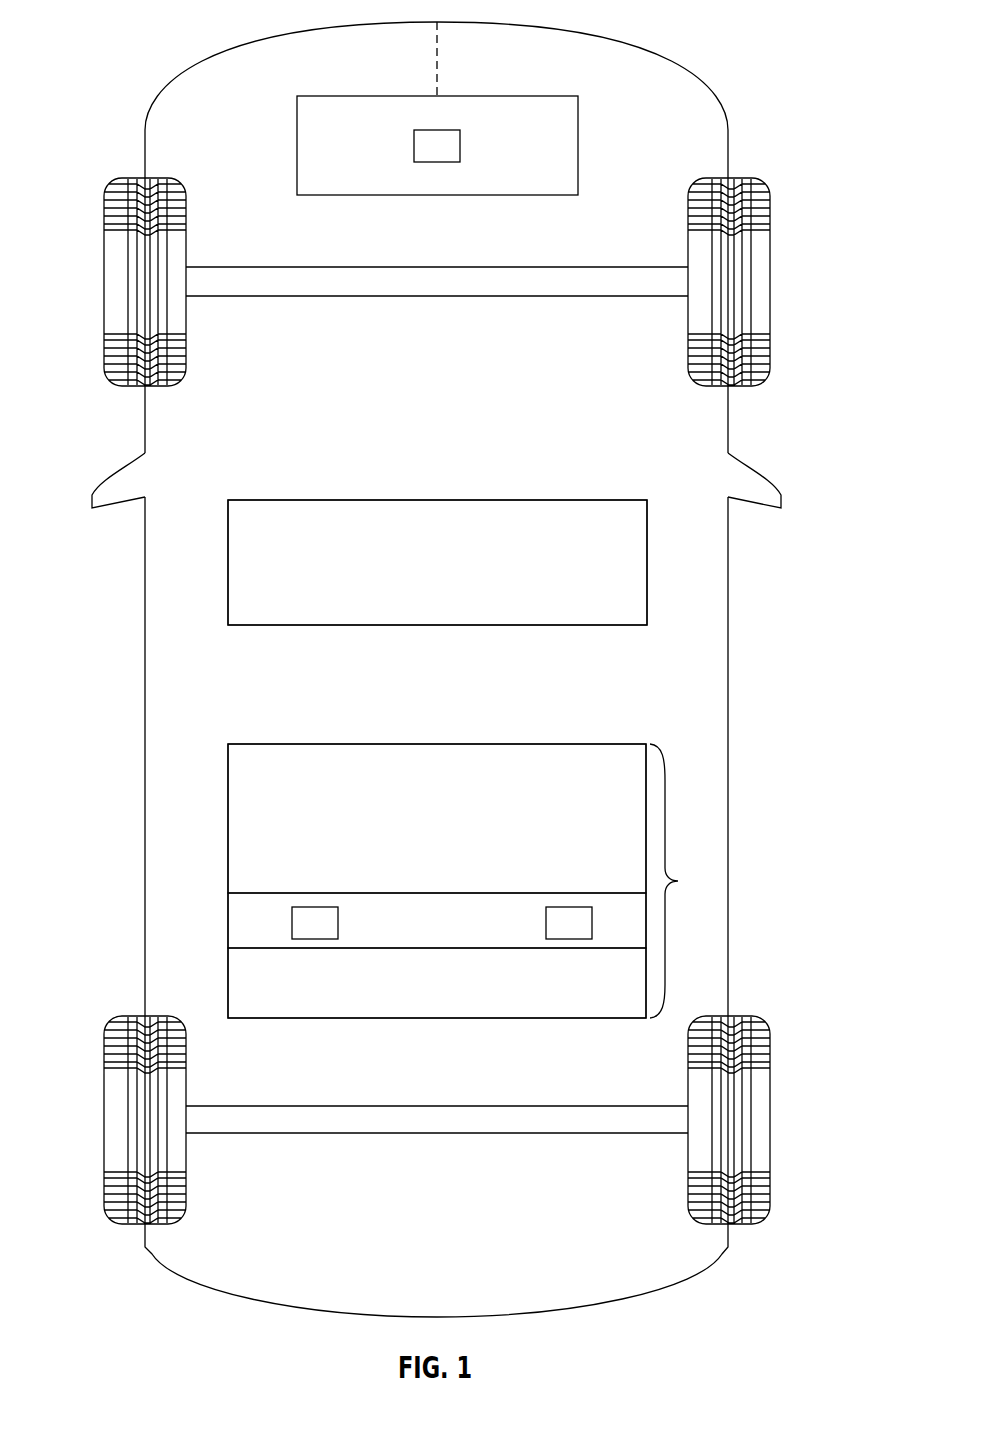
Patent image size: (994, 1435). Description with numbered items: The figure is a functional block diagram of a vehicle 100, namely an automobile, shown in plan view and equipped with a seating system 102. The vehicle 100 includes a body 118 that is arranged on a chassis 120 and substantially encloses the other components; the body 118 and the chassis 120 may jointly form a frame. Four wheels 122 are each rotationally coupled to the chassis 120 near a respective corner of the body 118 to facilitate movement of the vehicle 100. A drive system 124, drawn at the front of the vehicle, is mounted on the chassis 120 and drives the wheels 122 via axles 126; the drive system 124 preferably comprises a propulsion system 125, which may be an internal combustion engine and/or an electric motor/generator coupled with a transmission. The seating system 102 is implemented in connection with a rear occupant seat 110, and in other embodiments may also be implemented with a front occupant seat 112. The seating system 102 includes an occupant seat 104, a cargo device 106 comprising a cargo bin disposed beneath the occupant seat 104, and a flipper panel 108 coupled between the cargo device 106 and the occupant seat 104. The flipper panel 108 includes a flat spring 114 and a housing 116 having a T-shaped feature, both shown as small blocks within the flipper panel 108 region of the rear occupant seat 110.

The vehicle 100 is at (684, 41).
The seating system 102 is at (690, 881).
The occupant seat 104 is at (437, 696).
The cargo device 106 is at (437, 983).
The flipper panel 108 is at (437, 920).
The rear occupant seat 110 is at (600, 744).
The front occupant seat 112 is at (600, 500).
The flat spring 114 is at (315, 907).
The housing 116 is at (565, 907).
The body 118 is at (145, 690).
The chassis 120 is at (440, 73).
The wheels 122 is at (123, 293).
The drive system 124 is at (533, 96).
The propulsion system 125 is at (413, 146).
The axles 126 is at (230, 283).